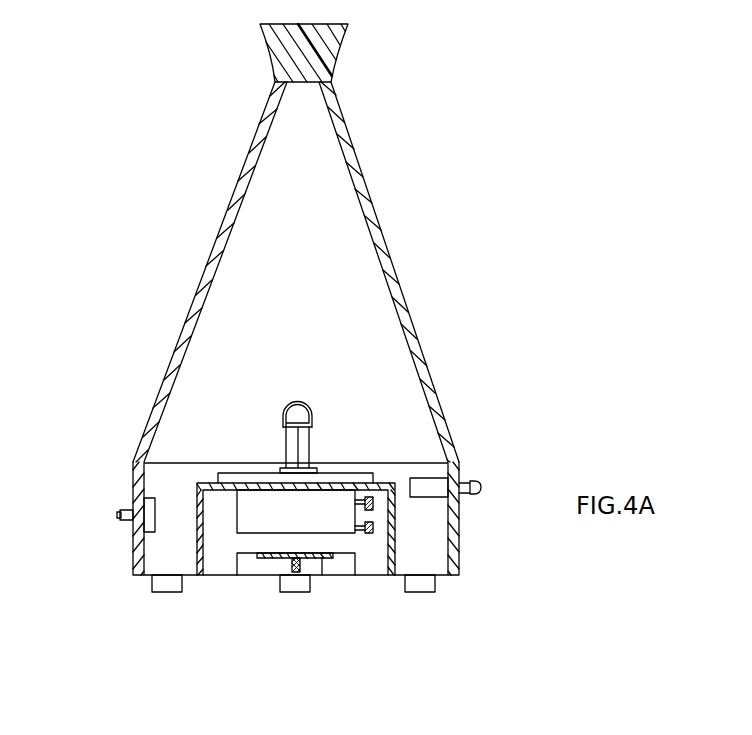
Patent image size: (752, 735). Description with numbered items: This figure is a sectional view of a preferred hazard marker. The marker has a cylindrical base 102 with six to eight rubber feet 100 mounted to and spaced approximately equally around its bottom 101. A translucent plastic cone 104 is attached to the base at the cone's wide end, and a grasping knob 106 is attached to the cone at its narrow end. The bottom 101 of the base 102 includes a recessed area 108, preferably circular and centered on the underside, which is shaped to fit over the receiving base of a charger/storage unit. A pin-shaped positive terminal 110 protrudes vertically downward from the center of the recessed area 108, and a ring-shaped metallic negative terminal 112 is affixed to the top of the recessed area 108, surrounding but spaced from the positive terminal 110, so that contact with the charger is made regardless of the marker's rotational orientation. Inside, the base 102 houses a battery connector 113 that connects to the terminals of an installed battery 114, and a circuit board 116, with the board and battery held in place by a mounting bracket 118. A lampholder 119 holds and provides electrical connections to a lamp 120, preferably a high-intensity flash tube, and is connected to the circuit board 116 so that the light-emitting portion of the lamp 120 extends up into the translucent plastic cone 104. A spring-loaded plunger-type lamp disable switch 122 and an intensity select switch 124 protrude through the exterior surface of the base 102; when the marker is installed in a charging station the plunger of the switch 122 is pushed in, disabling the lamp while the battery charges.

The rubber feet 100 is at (152, 583).
The bottom 101 is at (197, 576).
The cylindrical base 102 is at (88, 458).
The translucent plastic cone 104 is at (357, 157).
The grasping knob 106 is at (275, 23).
The recessed area 108 is at (343, 565).
The positive terminal 110 is at (292, 568).
The negative terminal 112 is at (324, 570).
The battery connector 113 is at (377, 500).
The battery 114 is at (208, 578).
The circuit board 116 is at (365, 475).
The mounting bracket 118 is at (197, 553).
The lampholder 119 is at (323, 464).
The lamp 120 is at (290, 402).
The lamp disable switch 122 is at (482, 487).
The intensity select switch 124 is at (130, 507).